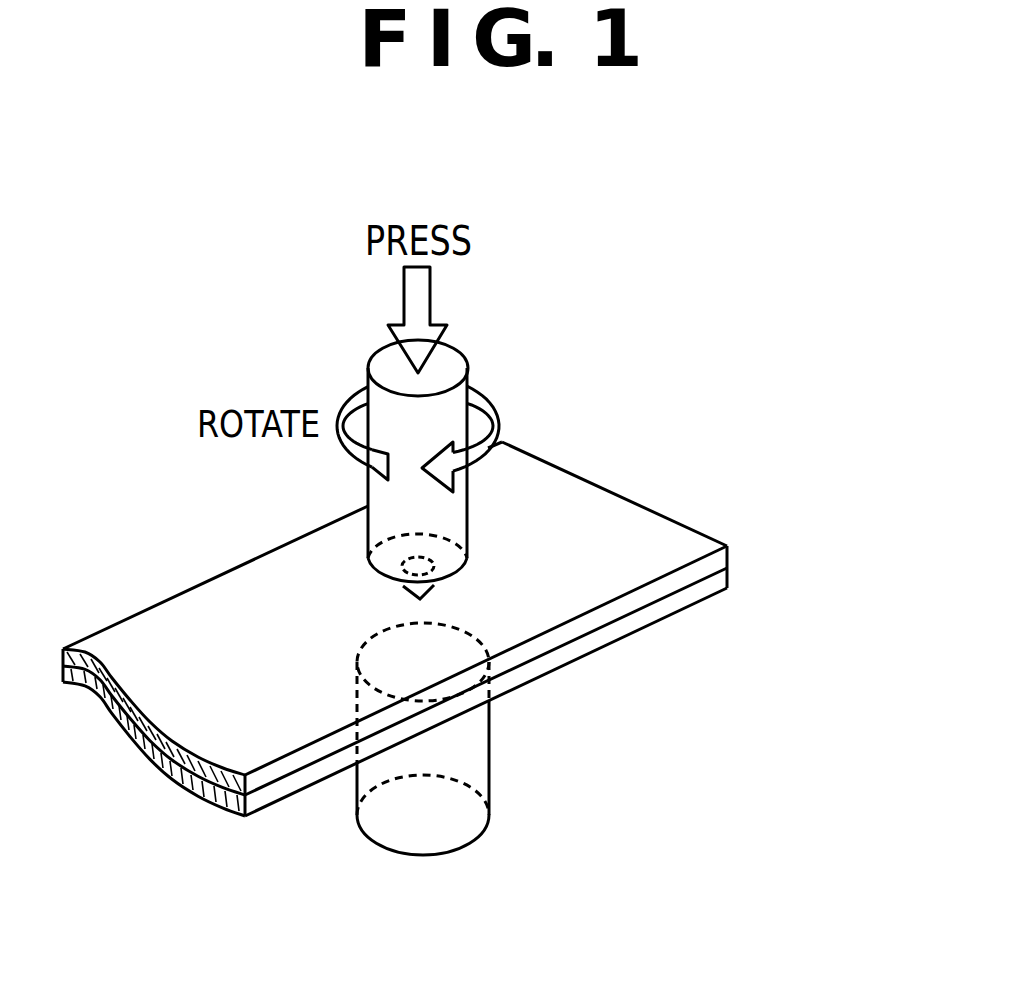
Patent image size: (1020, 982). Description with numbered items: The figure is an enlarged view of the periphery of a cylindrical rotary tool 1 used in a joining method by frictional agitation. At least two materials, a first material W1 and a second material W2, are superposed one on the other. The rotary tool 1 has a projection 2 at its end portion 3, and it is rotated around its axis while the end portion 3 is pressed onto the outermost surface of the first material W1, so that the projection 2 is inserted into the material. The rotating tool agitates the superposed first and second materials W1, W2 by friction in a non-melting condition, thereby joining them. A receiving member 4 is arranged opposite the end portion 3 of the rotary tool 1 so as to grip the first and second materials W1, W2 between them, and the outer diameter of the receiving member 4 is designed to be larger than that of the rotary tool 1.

The rotary tool 1 is at (467, 510).
The projection 2 is at (368, 560).
The end portion 3 is at (457, 573).
The receiving member 4 is at (482, 835).
The first material W1 is at (727, 551).
The second material W2 is at (727, 581).